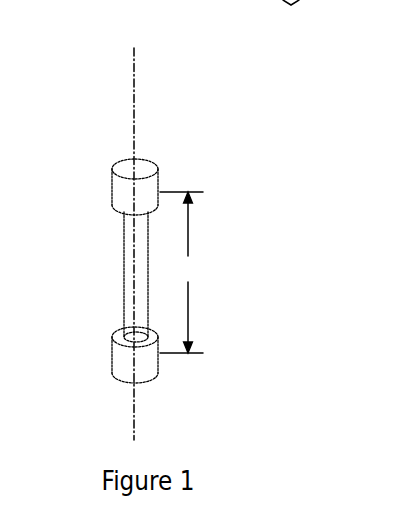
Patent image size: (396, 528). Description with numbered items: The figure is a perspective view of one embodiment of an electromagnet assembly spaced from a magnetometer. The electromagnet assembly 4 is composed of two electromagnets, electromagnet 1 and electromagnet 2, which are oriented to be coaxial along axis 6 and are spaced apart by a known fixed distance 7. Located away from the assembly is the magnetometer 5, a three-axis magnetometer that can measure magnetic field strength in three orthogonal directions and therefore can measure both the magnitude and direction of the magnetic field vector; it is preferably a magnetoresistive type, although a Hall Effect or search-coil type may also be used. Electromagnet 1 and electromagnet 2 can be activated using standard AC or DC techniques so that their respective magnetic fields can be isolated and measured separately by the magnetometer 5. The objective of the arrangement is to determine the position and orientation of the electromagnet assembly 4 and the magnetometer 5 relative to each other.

The electromagnet 1 is at (151, 190).
The electromagnet 2 is at (152, 365).
The electromagnet assembly 4 is at (97, 280).
The magnetometer 5 is at (278, 0).
The axis 6 is at (122, 73).
The fixed distance 7 is at (181, 272).